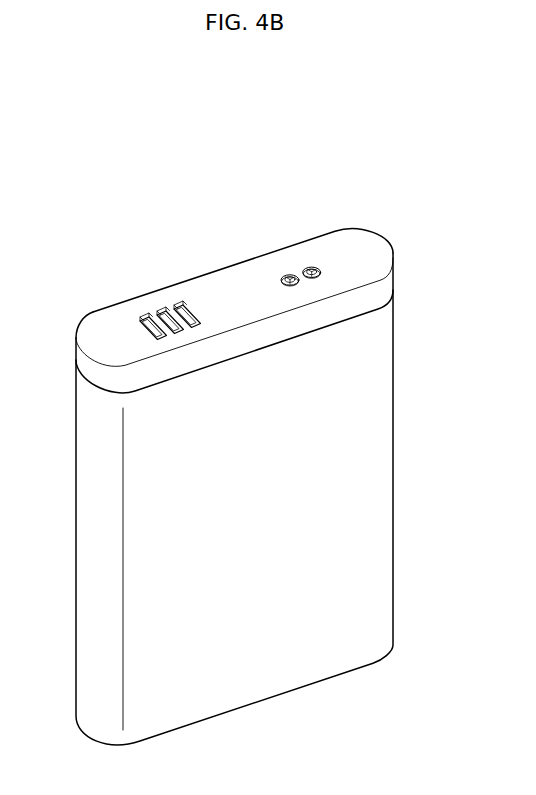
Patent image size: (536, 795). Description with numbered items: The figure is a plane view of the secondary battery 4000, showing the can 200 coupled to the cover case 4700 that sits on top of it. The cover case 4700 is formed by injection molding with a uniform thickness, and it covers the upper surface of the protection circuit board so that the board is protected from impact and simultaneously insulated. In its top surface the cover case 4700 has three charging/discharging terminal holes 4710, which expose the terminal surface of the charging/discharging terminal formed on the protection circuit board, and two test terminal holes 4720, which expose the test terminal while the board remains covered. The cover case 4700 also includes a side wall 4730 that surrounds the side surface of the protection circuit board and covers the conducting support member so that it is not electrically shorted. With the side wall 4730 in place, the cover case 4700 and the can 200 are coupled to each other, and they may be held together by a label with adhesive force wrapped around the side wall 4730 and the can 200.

The secondary battery 4000 is at (51, 206).
The can 200 is at (388, 458).
The cover case 4700 is at (84, 310).
The charging/discharging terminal hole 4710 is at (177, 307).
The test terminal hole 4720 is at (311, 267).
The side wall 4730 is at (388, 285).